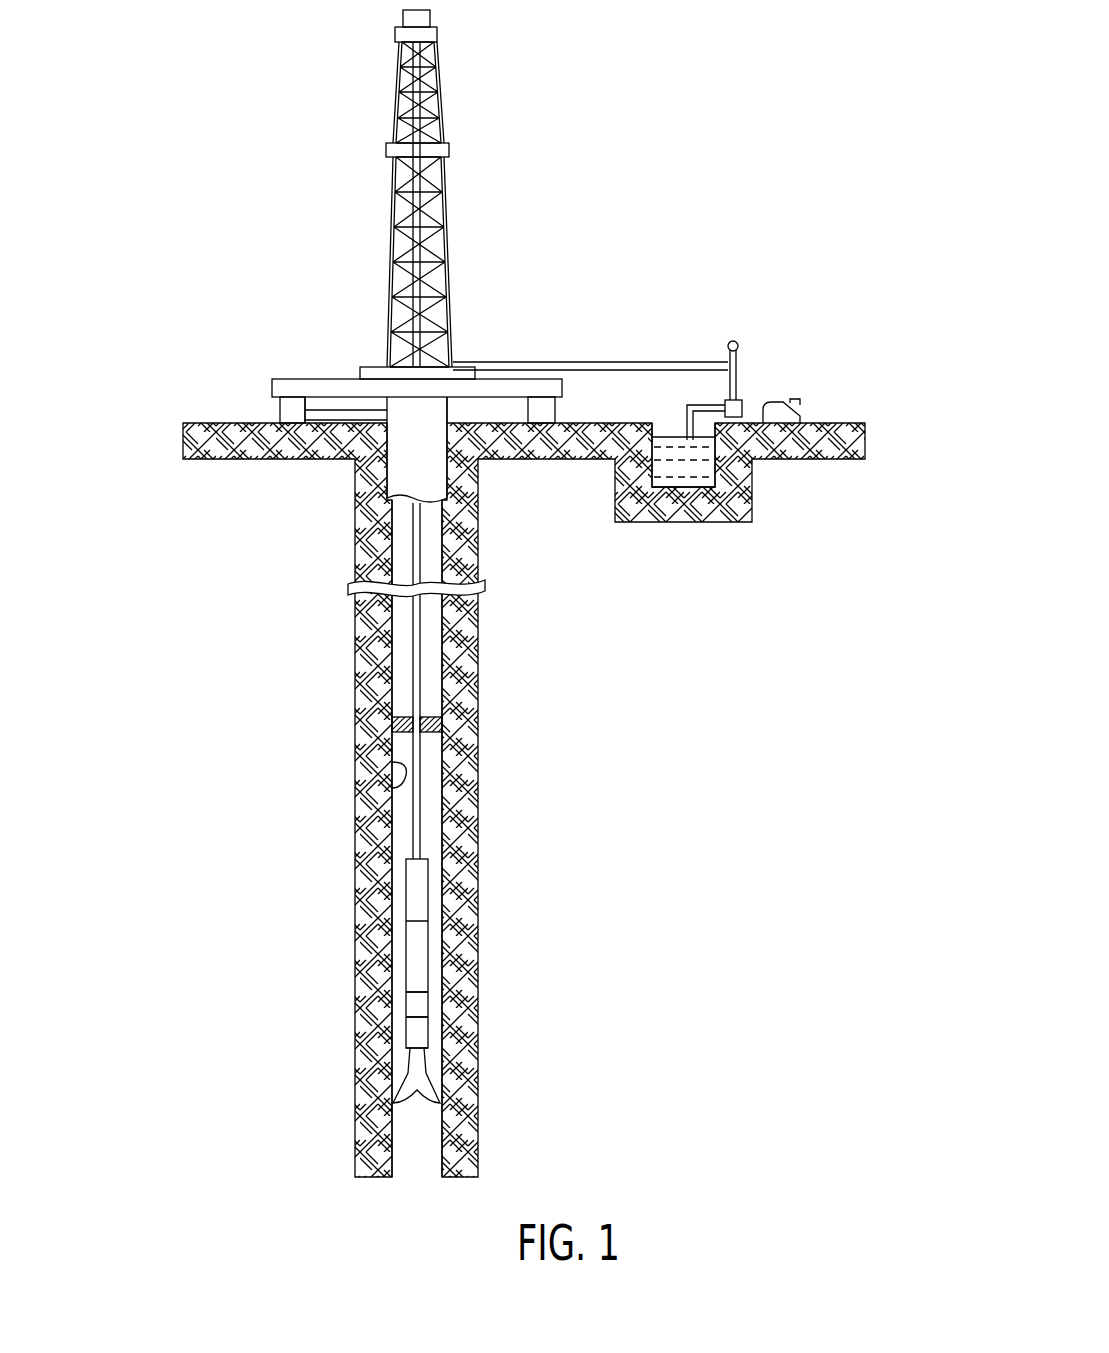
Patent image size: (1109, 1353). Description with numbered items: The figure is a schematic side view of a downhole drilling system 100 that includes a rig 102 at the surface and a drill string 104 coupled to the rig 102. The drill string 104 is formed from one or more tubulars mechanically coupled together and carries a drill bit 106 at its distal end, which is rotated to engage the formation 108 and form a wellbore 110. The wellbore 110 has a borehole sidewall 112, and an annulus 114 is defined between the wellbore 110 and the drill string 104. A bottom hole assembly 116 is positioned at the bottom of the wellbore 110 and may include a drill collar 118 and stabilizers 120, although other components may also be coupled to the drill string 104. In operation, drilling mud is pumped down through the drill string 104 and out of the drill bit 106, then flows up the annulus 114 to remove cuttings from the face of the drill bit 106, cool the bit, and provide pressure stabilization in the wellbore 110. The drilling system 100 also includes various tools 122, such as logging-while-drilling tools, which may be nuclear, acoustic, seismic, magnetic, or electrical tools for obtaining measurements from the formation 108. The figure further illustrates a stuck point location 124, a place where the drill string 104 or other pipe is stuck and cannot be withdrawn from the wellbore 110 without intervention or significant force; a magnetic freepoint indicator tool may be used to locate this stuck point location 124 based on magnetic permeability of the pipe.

The downhole drilling system 100 is at (645, 158).
The rig 102 is at (447, 246).
The drill string 104 is at (422, 678).
The drill bit 106 is at (413, 1084).
The formation 108 is at (777, 751).
The wellbore 110 is at (392, 763).
The borehole sidewall 112 is at (443, 890).
The annulus 114 is at (430, 782).
The bottom hole assembly 116 is at (429, 984).
The drill collar 118 is at (413, 1034).
The stabilizers 120 is at (413, 1003).
The tools 122 is at (413, 956).
The stuck point location 124 is at (389, 710).